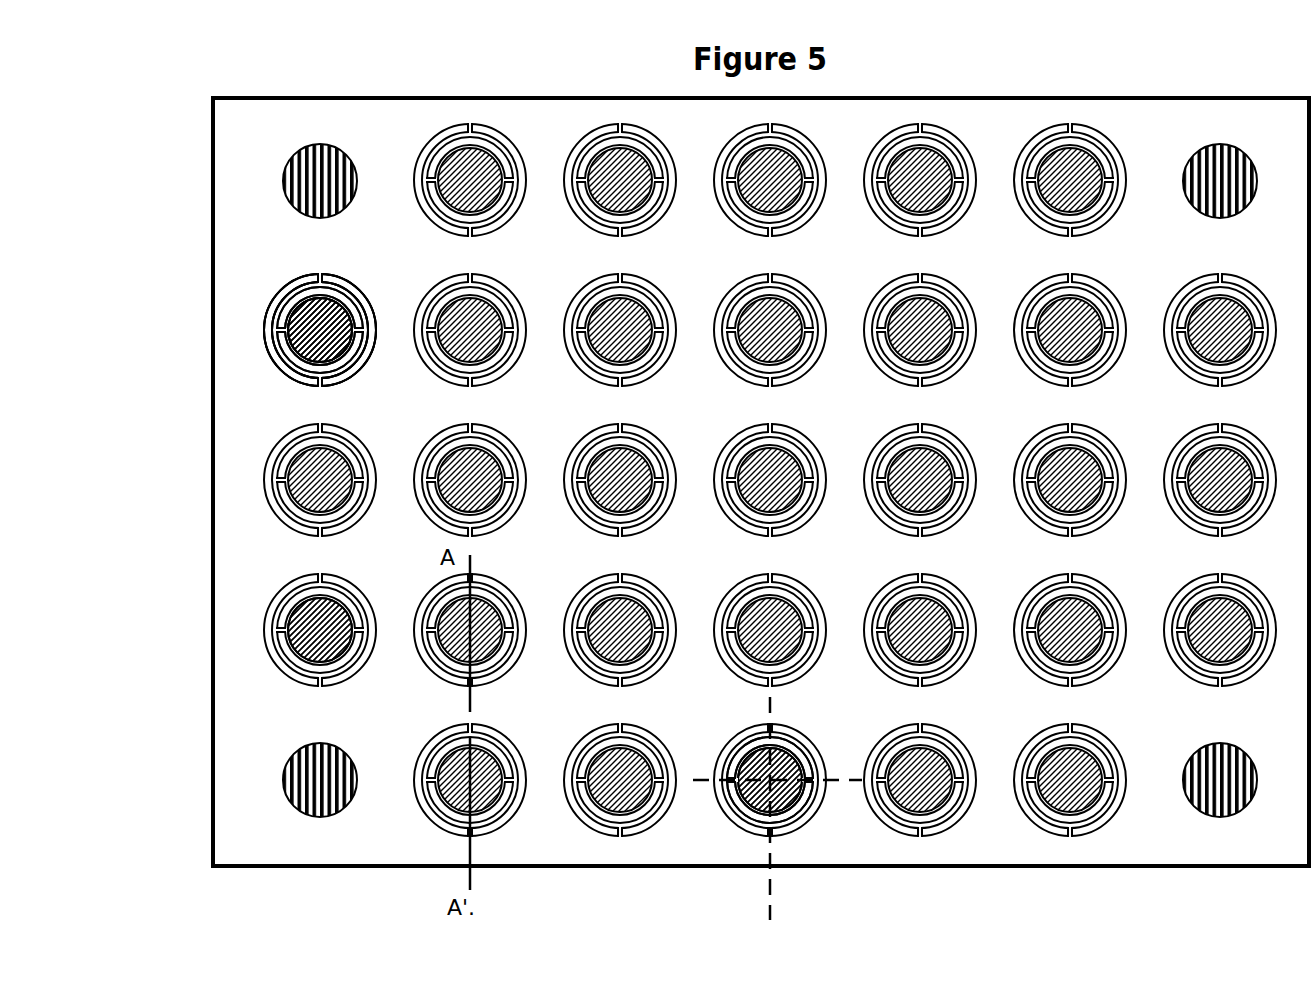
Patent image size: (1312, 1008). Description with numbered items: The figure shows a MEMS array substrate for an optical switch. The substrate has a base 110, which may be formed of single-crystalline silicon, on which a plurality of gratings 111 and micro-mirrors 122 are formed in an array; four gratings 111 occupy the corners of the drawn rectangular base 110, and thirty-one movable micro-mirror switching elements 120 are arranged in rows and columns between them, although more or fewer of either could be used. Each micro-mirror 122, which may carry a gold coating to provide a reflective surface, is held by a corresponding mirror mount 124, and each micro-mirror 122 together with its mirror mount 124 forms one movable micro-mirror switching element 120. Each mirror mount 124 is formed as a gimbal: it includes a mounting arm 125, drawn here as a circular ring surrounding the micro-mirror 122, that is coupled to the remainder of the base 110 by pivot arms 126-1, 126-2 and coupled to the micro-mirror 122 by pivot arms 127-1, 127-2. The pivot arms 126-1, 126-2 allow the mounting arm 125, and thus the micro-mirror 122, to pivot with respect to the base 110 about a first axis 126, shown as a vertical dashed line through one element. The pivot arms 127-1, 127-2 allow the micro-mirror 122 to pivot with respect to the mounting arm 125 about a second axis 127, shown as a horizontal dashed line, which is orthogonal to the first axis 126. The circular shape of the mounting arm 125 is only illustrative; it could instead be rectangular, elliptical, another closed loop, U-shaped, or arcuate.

The base 110 is at (245, 348).
The grating 111 is at (297, 148).
The movable micro-mirror switching element 120 is at (273, 287).
The micro-mirror 122 is at (330, 310).
The mirror mount 124 is at (288, 365).
The mounting arm 125 is at (807, 803).
The first axis 126 is at (768, 882).
The pivot arm 126-1 is at (775, 835).
The pivot arm 126-2 is at (763, 725).
The second axis 127 is at (697, 782).
The pivot arm 127-1 is at (722, 775).
The pivot arm 127-2 is at (813, 765).